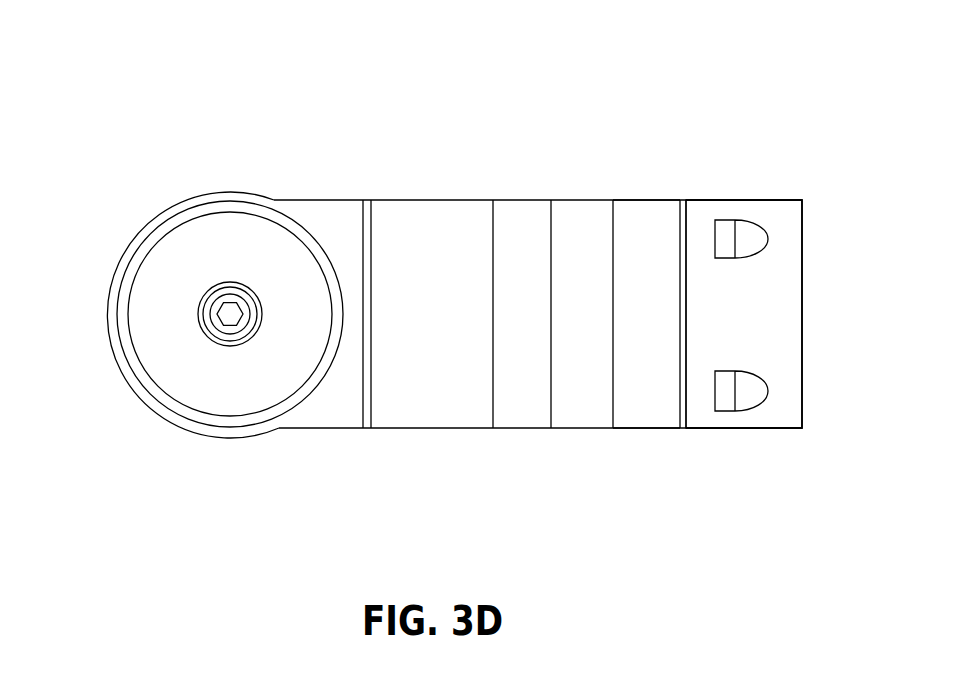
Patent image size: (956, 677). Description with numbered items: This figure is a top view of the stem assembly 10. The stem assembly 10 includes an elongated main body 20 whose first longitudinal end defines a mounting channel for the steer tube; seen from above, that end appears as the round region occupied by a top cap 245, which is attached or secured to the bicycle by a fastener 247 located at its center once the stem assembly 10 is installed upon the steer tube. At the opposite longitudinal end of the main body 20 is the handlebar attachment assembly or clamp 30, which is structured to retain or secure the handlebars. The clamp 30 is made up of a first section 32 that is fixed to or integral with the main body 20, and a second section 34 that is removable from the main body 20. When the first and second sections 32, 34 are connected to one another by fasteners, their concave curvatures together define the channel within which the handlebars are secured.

The stem assembly 10 is at (449, 222).
The main body 20 is at (436, 225).
The handlebar attachment assembly or clamp 30 is at (729, 220).
The first section 32 is at (640, 218).
The second section 34 is at (785, 210).
The top cap 245 is at (198, 223).
The fastener 247 is at (229, 316).